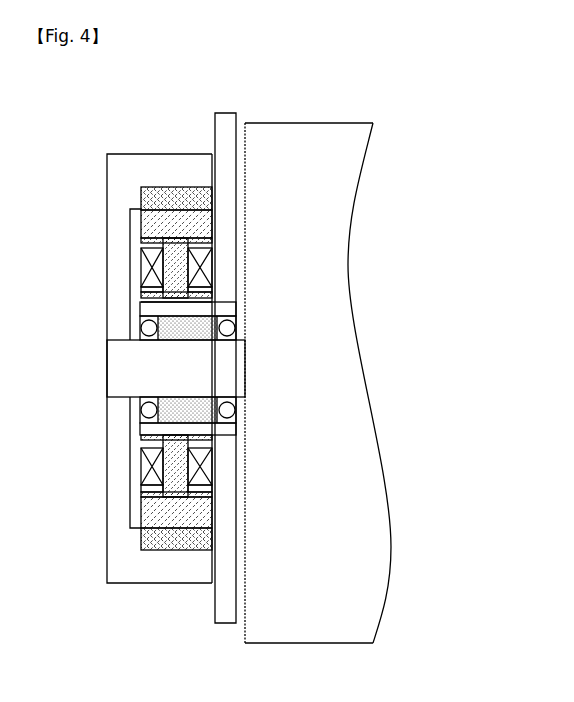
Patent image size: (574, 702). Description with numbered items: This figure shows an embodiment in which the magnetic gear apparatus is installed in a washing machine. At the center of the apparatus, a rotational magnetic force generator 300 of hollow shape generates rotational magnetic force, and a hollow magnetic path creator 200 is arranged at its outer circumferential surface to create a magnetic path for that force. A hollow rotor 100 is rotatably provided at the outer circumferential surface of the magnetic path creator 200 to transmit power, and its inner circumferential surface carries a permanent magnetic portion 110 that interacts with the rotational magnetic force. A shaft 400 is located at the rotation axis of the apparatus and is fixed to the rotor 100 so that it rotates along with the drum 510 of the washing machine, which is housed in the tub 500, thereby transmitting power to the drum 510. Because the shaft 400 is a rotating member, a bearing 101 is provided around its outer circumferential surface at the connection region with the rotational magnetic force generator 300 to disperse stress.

The rotor 100 is at (108, 163).
The bearing 101 is at (236, 325).
The permanent magnetic portion 110 is at (141, 193).
The magnetic path creator 200 is at (142, 221).
The rotational magnetic force generator 300 is at (170, 271).
The shaft 400 is at (107, 377).
The tub 500 is at (215, 122).
The drum 510 is at (306, 127).